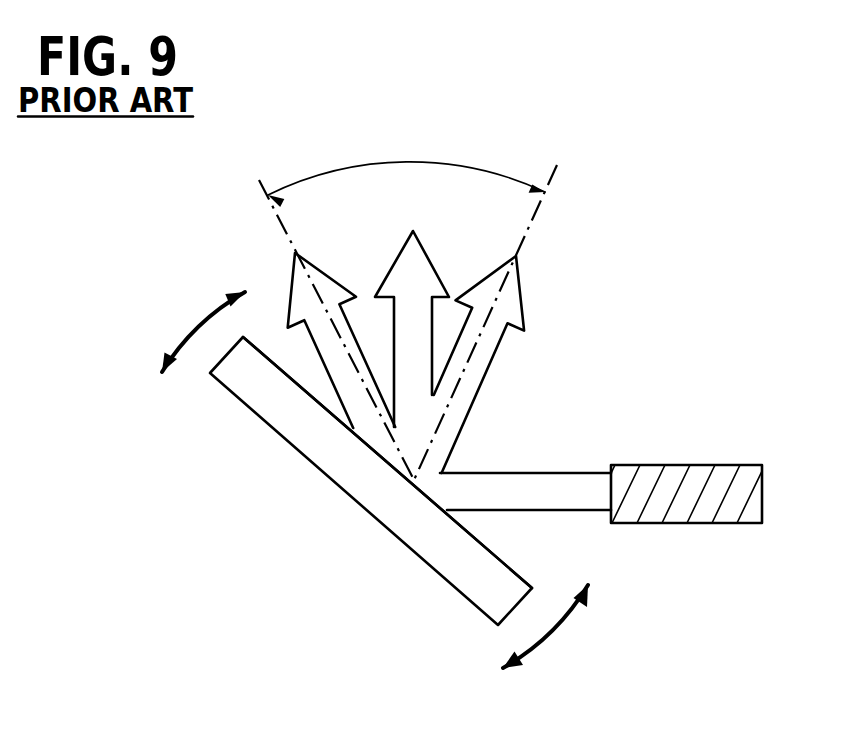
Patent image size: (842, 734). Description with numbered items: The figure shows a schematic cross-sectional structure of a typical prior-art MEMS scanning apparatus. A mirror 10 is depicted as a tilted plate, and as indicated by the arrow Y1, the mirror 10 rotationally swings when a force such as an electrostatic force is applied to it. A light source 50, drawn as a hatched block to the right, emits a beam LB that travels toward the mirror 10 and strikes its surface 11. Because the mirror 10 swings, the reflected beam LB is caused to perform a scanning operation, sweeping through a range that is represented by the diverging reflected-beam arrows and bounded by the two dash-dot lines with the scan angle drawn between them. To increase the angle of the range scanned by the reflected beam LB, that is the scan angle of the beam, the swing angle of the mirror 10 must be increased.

The mirror 10 is at (457, 572).
The reflecting surface of mirror 11 is at (493, 549).
The light source 50 is at (688, 480).
The beam LB is at (561, 487).
The arrow Y1 is at (377, 480).